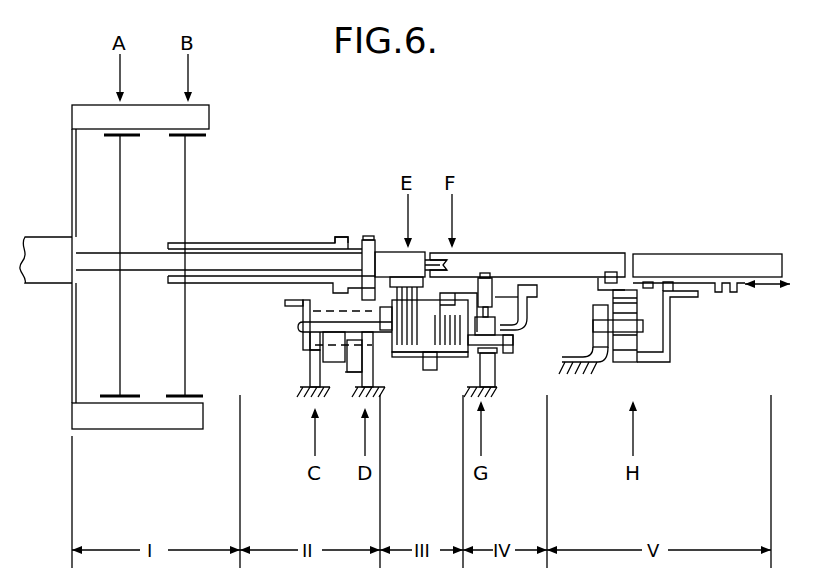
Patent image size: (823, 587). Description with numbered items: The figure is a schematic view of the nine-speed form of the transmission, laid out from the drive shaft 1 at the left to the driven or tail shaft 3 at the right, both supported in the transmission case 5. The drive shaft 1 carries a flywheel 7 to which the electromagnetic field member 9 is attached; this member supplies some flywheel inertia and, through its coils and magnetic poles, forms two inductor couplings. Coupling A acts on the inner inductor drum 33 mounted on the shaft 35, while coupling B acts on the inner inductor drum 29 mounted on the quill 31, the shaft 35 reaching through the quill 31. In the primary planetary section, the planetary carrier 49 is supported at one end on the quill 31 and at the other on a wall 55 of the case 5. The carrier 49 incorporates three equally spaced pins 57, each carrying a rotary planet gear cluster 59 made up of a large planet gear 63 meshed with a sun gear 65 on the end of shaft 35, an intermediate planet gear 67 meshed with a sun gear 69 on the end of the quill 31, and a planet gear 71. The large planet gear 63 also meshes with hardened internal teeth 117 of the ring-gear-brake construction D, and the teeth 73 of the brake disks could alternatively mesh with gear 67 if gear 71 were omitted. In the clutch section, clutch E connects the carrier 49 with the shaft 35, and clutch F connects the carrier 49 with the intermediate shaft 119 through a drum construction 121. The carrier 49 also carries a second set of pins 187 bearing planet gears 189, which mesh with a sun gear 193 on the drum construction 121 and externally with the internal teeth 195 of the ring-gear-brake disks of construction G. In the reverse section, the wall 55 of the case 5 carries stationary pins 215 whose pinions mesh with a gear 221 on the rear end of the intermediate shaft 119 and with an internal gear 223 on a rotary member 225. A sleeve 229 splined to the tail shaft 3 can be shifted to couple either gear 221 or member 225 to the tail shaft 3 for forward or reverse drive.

The drive shaft 1 is at (39, 283).
The driven or tail shaft 3 is at (755, 258).
The transmission case 5 is at (573, 375).
The flywheel 7 is at (72, 325).
The electromagnetic field member 9 is at (140, 420).
The inner inductor drum 29 is at (185, 374).
The quill 31 is at (244, 278).
The inner inductor drum 33 is at (120, 374).
The shaft 35 is at (145, 262).
The planetary carrier 49 is at (452, 362).
The wall of the case 55 is at (600, 350).
The pins 57 is at (300, 327).
The planet gear cluster 59 is at (302, 350).
The large planet gear 63 is at (373, 362).
The sun gear 65 is at (370, 236).
The intermediate planet gear 67 is at (340, 362).
The sun gear 69 is at (341, 237).
The planet gear 71 is at (314, 342).
The teeth 73 is at (318, 352).
The internal teeth 117 is at (352, 380).
The intermediate shaft 119 is at (538, 258).
The drum construction 121 is at (465, 292).
The pins 187 is at (503, 348).
The planet gears 189 is at (472, 357).
The sun gear 193 is at (490, 315).
The internal teeth 195 is at (495, 370).
The stationary pins 215 is at (598, 324).
The gear 221 is at (612, 272).
The internal gear 223 is at (632, 360).
The rotary member 225 is at (671, 325).
The sleeve 229 is at (717, 288).